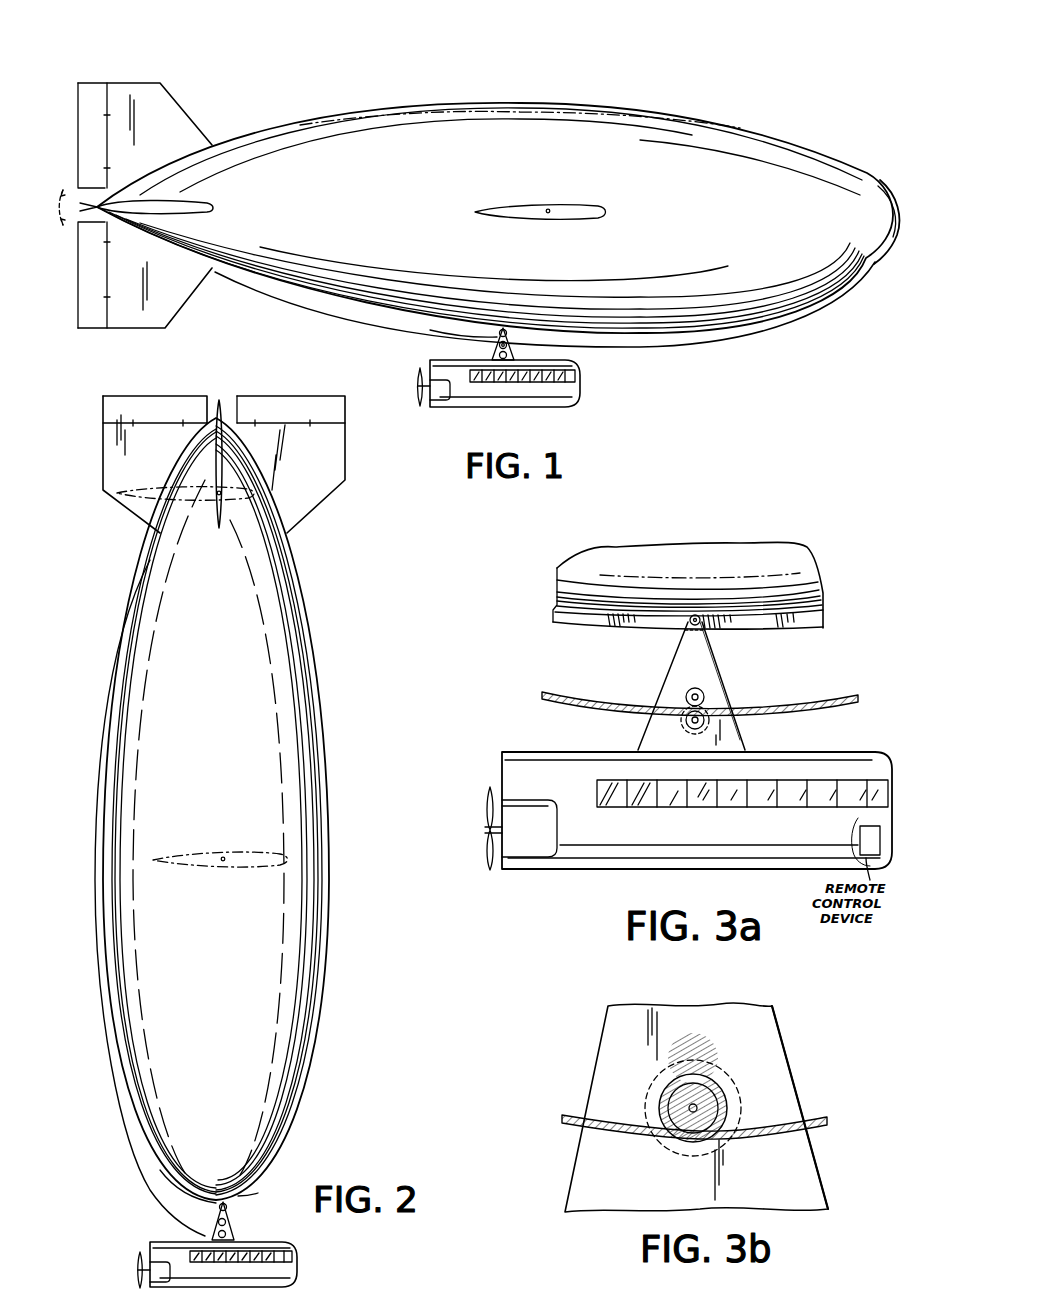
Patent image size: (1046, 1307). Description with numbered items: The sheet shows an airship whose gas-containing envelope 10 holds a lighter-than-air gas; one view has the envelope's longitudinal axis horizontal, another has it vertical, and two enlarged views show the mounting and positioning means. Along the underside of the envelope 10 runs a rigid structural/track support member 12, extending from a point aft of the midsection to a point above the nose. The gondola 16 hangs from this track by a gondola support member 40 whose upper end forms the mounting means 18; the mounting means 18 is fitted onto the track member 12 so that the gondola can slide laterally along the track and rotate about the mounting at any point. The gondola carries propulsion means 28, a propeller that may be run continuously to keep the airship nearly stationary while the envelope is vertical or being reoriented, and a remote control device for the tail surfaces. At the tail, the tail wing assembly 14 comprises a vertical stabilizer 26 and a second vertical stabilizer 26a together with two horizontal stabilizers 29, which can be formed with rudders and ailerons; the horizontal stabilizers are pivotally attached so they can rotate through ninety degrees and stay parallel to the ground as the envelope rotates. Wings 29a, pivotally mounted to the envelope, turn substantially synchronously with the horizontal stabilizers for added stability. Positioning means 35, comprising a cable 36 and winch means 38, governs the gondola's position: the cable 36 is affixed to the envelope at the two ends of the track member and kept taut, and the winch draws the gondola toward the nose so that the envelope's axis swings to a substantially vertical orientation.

In FIG. 1, the gas-containing envelope 10 is at (745, 132).
In FIG. 2, the gas-containing envelope 10 is at (317, 982).
In FIG. 3a, the gas-containing envelope 10 is at (793, 556).
In FIG. 1, the structural/track support member 12 is at (803, 297).
In FIG. 2, the structural/track support member 12 is at (160, 1177).
In FIG. 3a, the structural/track support member 12 is at (815, 618).
In FIG. 1, the tail wing assembly 14 is at (197, 112).
In FIG. 1, the gondola 16 is at (580, 395).
In FIG. 2, the gondola 16 is at (293, 1273).
In FIG. 3a, the gondola 16 is at (580, 853).
In FIG. 1, the mounting means 18 is at (507, 325).
In FIG. 3a, the mounting means 18 is at (690, 620).
In FIG. 1, the vertical stabilizer 26 is at (143, 93).
In FIG. 1, the vertical stabilizer 26a is at (78, 313).
In FIG. 1, the propulsion means 28 is at (422, 390).
In FIG. 2, the propulsion means 28 is at (140, 1267).
In FIG. 3a, the propulsion means 28 is at (487, 850).
In FIG. 1, the horizontal stabilizer 29 is at (207, 207).
In FIG. 2, the horizontal stabilizer 29 is at (150, 490).
In FIG. 1, the wing 29a is at (567, 202).
In FIG. 2, the wing 29a is at (173, 857).
In FIG. 2, the positioning means 35 is at (240, 1235).
In FIG. 1, the cable 36 is at (723, 340).
In FIG. 2, the cable 36 is at (123, 1157).
In FIG. 3a, the cable 36 is at (765, 712).
In FIG. 3b, the cable 36 is at (823, 1127).
In FIG. 1, the winch means 38 is at (513, 347).
In FIG. 3a, the winch means 38 is at (703, 707).
In FIG. 3b, the winch means 38 is at (705, 1095).
In FIG. 1, the gondola support member 40 is at (497, 337).
In FIG. 3a, the gondola support member 40 is at (713, 665).
In FIG. 3b, the gondola support member 40 is at (790, 1095).